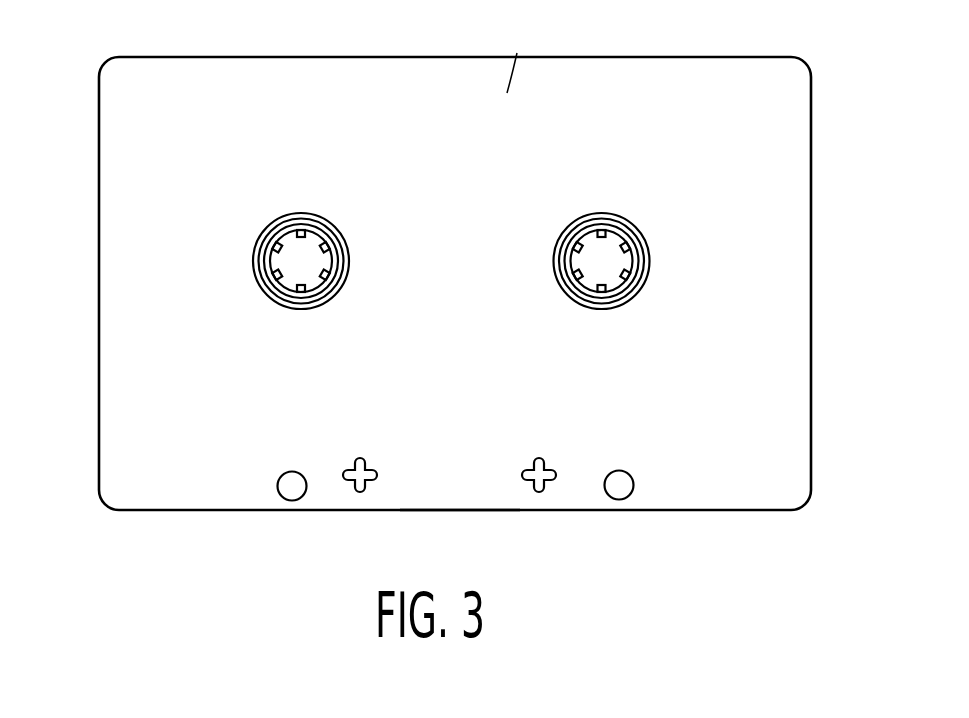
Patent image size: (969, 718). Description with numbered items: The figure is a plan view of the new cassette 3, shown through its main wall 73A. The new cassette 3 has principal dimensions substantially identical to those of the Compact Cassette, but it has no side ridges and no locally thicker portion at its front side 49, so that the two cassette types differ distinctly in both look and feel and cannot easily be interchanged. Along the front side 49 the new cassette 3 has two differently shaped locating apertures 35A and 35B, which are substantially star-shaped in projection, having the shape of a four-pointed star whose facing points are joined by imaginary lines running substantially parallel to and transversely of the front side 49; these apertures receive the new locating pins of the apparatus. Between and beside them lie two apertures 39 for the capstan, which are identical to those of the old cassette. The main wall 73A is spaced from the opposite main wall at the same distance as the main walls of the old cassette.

The new cassette 3 is at (533, 38).
The main wall 73A is at (773, 182).
The apertures for the capstan 39 is at (292, 493).
The locating aperture 35B is at (353, 490).
The locating aperture 35A is at (545, 487).
The front side 49 is at (465, 513).